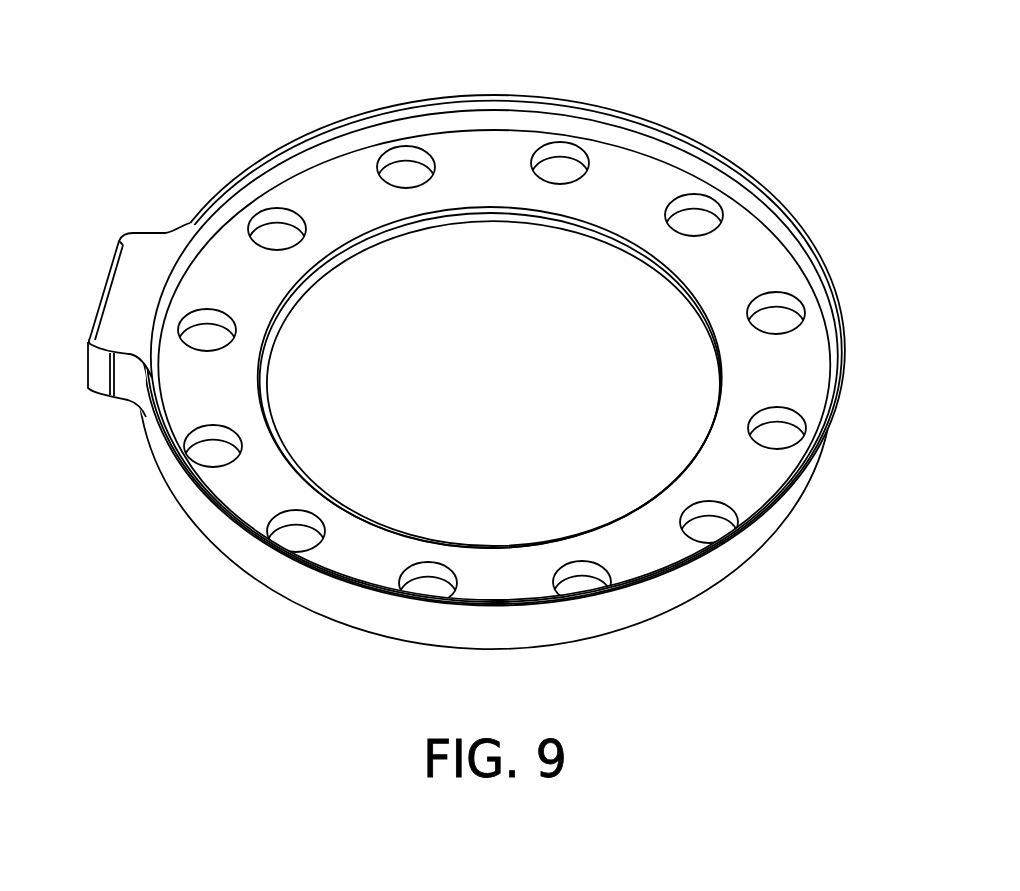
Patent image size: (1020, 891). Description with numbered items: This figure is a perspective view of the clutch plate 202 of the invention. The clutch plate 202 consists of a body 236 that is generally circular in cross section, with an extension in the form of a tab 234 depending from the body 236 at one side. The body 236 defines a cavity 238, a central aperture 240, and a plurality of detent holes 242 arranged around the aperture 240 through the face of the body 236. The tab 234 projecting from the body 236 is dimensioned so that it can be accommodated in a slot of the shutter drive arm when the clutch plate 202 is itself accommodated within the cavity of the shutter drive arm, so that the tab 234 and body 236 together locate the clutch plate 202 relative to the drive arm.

The clutch plate 202 is at (670, 613).
The tab 234 is at (100, 307).
The body 236 is at (797, 520).
The cavity 238 is at (750, 267).
The aperture 240 is at (603, 240).
The detent holes 242 is at (280, 213).